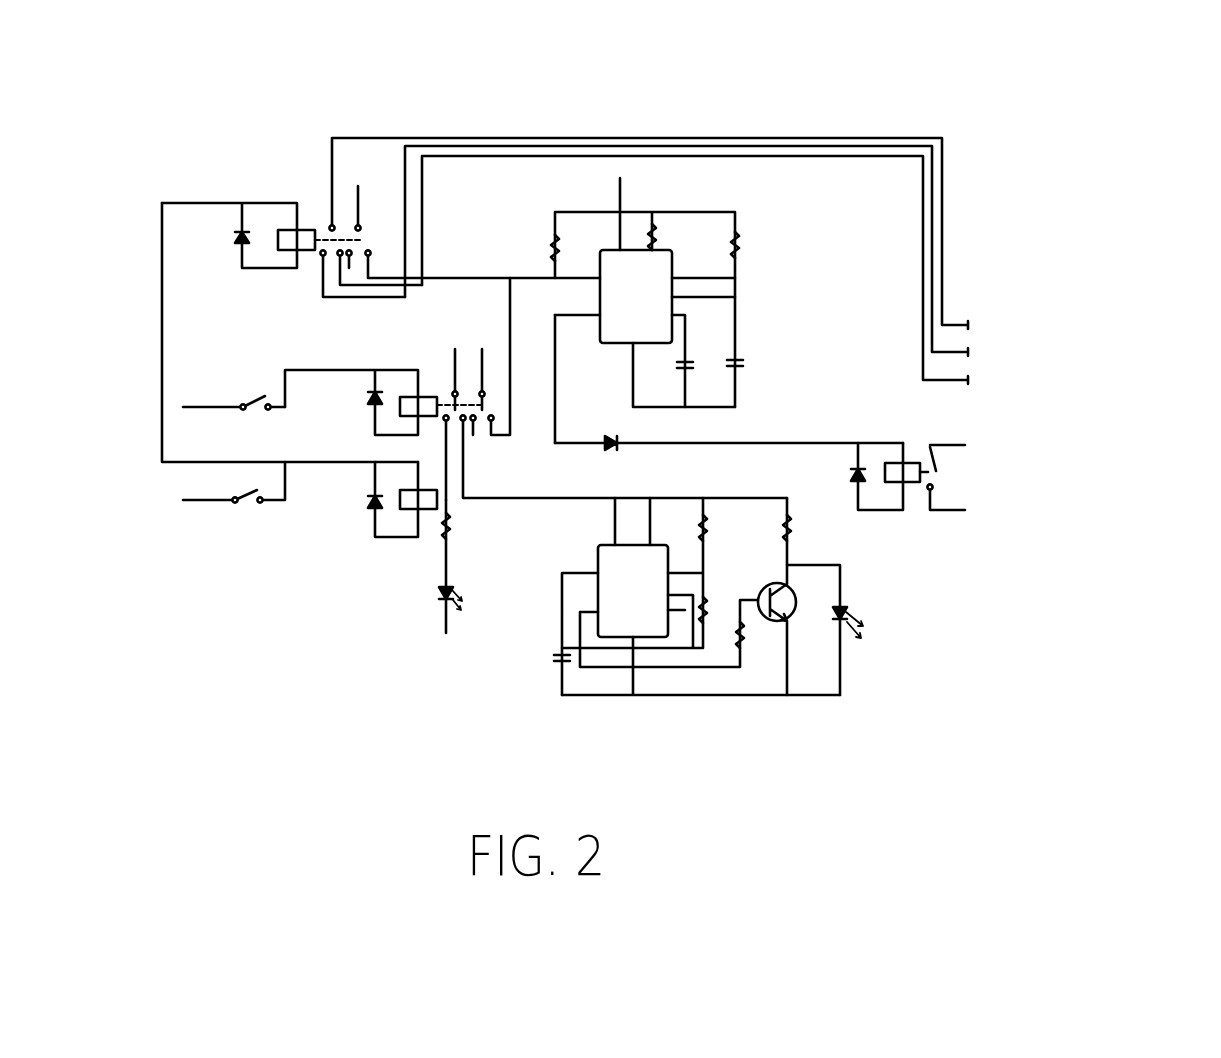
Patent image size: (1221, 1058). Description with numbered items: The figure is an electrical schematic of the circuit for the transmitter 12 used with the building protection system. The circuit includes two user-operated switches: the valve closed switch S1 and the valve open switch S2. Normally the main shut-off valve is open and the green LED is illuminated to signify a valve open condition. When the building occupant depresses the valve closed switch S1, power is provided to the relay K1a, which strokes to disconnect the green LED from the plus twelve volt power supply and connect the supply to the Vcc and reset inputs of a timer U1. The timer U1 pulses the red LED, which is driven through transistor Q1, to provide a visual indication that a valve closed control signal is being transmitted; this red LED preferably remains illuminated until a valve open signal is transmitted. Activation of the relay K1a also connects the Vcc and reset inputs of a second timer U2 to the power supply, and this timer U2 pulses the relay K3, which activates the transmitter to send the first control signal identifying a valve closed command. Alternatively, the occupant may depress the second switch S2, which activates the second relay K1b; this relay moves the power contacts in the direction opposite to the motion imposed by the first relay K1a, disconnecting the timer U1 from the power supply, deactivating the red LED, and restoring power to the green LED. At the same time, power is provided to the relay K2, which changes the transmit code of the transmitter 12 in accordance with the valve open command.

The transmitter 12 is at (798, 117).
The relay K2 is at (381, 230).
The relay K1a is at (536, 412).
The second relay K1b is at (402, 499).
The relay K3 is at (925, 483).
The timer U1 is at (697, 596).
The second timer U2 is at (647, 305).
The transistor Q1 is at (791, 596).
The valve closed switch S1 is at (227, 390).
The valve open switch S2 is at (227, 502).